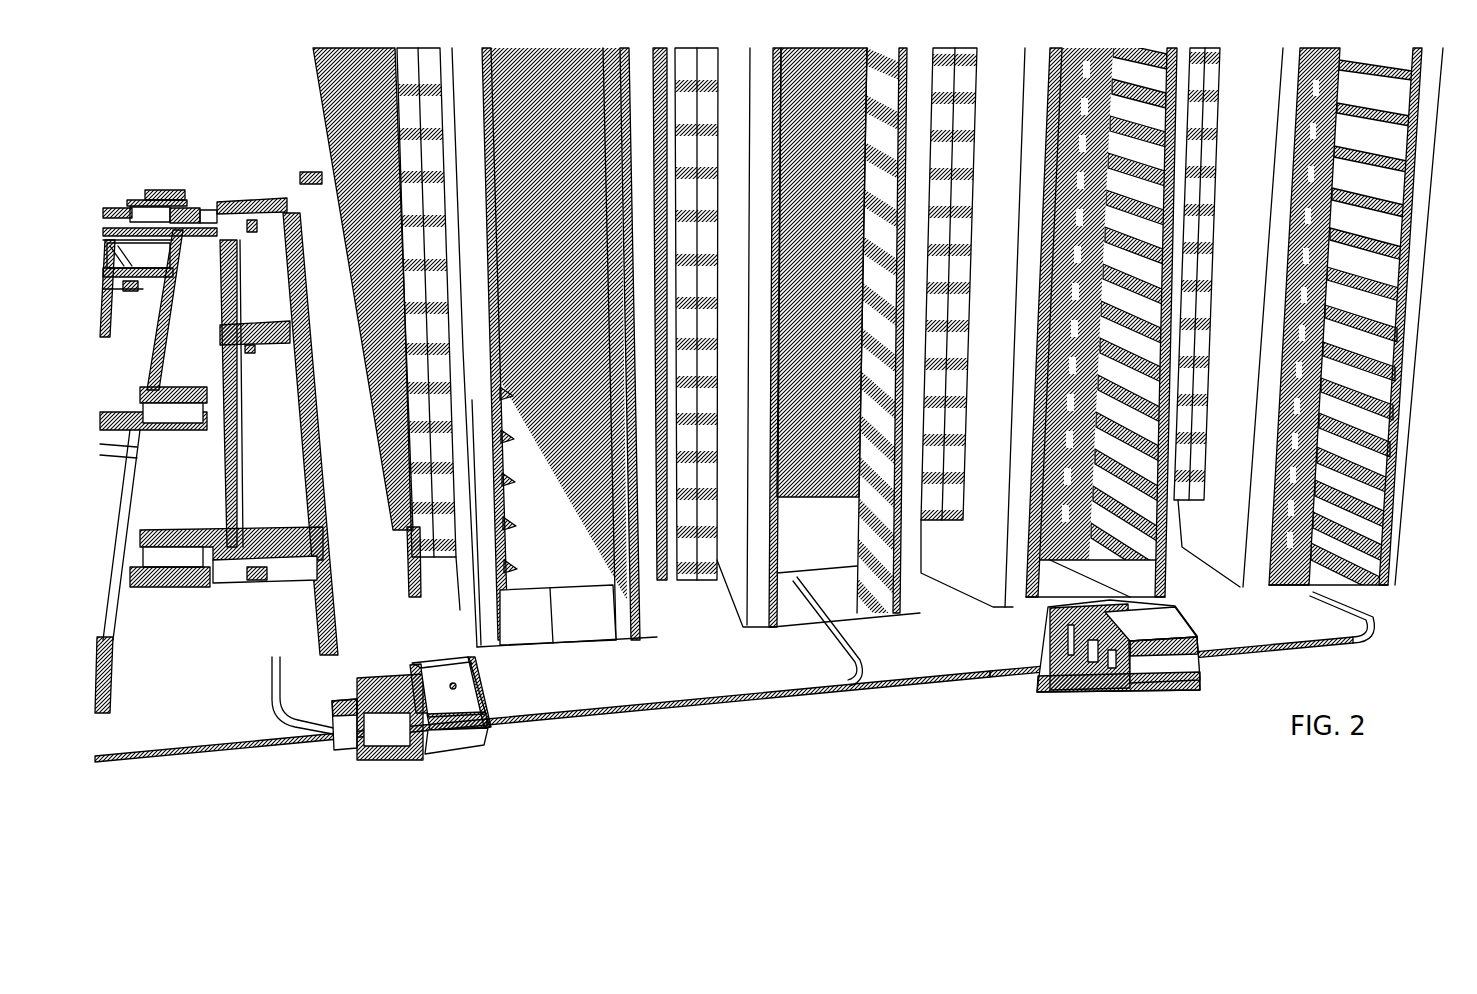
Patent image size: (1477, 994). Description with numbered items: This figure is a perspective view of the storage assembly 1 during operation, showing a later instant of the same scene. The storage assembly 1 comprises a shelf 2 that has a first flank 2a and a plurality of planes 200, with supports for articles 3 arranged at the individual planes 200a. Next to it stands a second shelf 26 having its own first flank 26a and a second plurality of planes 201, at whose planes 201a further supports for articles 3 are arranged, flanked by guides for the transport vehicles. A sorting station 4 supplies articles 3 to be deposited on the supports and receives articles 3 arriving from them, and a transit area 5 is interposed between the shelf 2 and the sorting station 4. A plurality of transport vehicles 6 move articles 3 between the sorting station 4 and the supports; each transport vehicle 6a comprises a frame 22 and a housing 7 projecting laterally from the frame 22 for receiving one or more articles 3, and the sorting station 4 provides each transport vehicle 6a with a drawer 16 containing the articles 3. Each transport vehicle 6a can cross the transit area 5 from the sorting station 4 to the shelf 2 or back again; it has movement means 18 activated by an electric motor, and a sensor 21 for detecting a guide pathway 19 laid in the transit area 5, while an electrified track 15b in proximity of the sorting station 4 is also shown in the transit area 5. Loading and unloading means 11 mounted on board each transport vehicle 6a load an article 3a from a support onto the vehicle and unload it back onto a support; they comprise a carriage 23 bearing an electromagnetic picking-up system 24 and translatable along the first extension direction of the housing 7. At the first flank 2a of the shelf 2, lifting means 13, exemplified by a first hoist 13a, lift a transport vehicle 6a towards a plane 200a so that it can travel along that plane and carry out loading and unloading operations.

The storage assembly 1 is at (1002, 698).
The shelf 2 is at (1342, 44).
The first flank 2a is at (1287, 596).
The articles 3 is at (377, 650).
The article 3a is at (350, 693).
The sorting station 4 is at (190, 170).
The transit area 5 is at (697, 690).
The plurality of transport vehicles 6 is at (500, 734).
The transport vehicle 6a is at (437, 672).
The housing 7 is at (1163, 700).
The loading and unloading means 11 is at (1063, 654).
The lifting means 13 is at (1353, 588).
The first hoist 13a is at (1348, 442).
The electrified track 15b is at (303, 455).
The drawer 16 is at (350, 728).
The movement means 18 is at (1060, 685).
The guide pathway 19 is at (800, 693).
The sensor 21 is at (252, 581).
The frame 22 is at (463, 693).
The carriage 23 is at (1160, 640).
The electromagnetic picking-up system 24 is at (1135, 695).
The second shelf 26 is at (1300, 46).
The first flank 26a is at (1312, 595).
The plurality of planes 200 is at (1382, 303).
The plane 200a is at (1370, 330).
The second plurality of planes 201 is at (1287, 230).
The plane 201a is at (1285, 285).